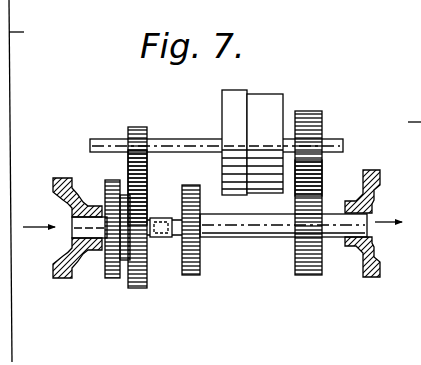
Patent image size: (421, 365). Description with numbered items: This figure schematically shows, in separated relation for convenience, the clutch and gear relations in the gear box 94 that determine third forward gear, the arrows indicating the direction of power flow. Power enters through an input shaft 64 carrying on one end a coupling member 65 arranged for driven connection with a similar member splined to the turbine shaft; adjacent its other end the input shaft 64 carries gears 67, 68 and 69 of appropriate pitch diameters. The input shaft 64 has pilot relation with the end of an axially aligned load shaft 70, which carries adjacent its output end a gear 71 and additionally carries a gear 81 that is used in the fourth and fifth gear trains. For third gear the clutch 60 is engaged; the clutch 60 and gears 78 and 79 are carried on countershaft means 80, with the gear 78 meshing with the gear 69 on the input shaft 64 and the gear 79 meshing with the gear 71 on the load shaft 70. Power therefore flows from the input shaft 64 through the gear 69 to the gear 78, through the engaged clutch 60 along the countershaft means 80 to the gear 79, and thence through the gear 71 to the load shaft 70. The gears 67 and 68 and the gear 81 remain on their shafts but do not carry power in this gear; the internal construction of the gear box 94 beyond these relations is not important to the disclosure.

The gear box 94 is at (34, 36).
The clutch 60 is at (257, 94).
The input shaft 64 is at (97, 242).
The coupling member 65 is at (60, 178).
The gear 67 is at (110, 279).
The gear 68 is at (125, 262).
The gear 69 is at (145, 289).
The load shaft 70 is at (243, 240).
The gear 71 is at (308, 276).
The gear 78 is at (133, 127).
The gear 79 is at (308, 111).
The countershaft means 80 is at (172, 138).
The gear 81 is at (190, 276).